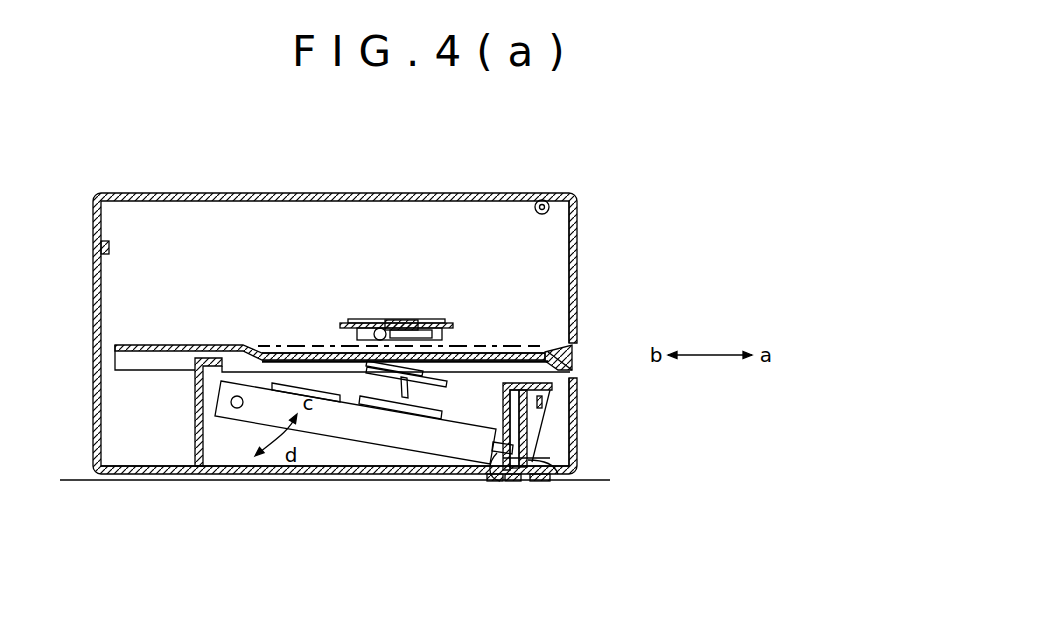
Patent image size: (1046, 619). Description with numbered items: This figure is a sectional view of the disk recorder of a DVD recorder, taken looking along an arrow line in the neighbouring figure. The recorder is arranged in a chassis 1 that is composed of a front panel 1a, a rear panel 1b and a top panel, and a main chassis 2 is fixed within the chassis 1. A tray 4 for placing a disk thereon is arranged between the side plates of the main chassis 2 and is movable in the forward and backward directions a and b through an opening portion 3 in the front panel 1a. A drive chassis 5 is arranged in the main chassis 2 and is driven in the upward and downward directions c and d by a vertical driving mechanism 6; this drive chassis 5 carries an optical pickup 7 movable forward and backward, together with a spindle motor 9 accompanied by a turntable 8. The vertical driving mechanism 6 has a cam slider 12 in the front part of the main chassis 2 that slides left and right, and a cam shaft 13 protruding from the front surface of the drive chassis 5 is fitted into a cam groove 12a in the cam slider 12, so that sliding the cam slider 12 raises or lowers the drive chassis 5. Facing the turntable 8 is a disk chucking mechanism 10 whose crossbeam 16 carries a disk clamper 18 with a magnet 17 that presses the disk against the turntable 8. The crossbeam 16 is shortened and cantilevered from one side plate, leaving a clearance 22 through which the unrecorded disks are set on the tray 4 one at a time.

The chassis 1 is at (272, 190).
The front panel 1a is at (578, 230).
The rear panel 1b is at (232, 478).
The main chassis 2 is at (188, 416).
The opening portion 3 is at (578, 345).
The tray 4 is at (578, 366).
The drive chassis 5 is at (244, 410).
The vertical driving mechanism 6 is at (545, 448).
The optical pickup 7 is at (330, 398).
The turntable 8 is at (367, 372).
The spindle motor 9 is at (430, 416).
The disk chucking mechanism 10 is at (425, 284).
The cam slider 12 is at (510, 476).
The cam groove 12a is at (553, 477).
The cam shaft 13 is at (483, 478).
The crossbeam 16 is at (458, 327).
The magnet 17 is at (372, 323).
The disk clamper 18 is at (430, 320).
The clearance 22 is at (326, 326).